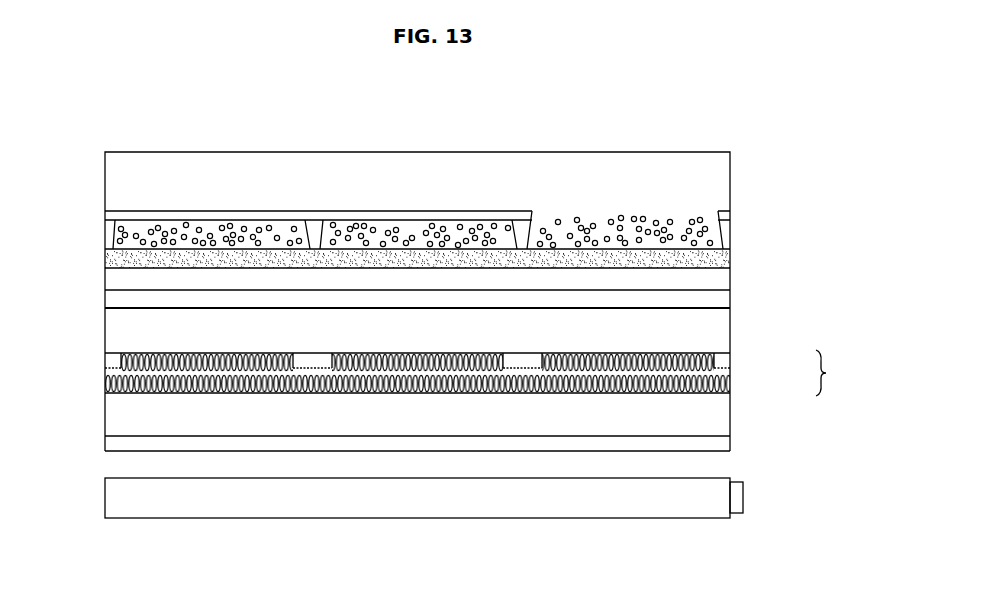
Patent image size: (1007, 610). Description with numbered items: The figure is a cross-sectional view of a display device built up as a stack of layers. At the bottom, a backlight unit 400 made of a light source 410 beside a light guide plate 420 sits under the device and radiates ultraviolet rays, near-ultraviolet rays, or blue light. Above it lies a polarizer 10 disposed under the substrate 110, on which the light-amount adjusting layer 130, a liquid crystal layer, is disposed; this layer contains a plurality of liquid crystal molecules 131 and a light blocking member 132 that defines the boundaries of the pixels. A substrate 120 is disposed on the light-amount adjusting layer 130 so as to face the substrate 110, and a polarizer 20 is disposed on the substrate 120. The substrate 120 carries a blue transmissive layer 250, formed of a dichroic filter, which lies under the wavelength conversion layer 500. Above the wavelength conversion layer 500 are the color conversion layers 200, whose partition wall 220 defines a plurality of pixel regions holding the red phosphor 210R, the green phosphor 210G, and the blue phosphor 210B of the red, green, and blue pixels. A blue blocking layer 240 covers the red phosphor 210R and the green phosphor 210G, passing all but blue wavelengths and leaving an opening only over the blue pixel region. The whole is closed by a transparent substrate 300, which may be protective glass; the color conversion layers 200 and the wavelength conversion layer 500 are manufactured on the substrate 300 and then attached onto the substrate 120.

The color conversion layer 200 is at (96, 231).
The substrate 300 is at (715, 180).
The blue blocking layer 240 is at (732, 212).
The partition wall 220 is at (726, 238).
The red phosphor 210R is at (255, 232).
The green phosphor 210G is at (378, 227).
The blue phosphor 210B is at (588, 220).
The wavelength conversion layer 500 is at (720, 258).
The blue transmissive layer 250 is at (718, 277).
The polarizer 20 is at (718, 300).
The substrate 120 is at (715, 333).
The light-amount adjusting layer 130 is at (841, 373).
The light blocking member 132 is at (719, 362).
The liquid crystal molecules 131 is at (731, 385).
The substrate 110 is at (715, 413).
The polarizer 10 is at (720, 443).
The backlight unit 400 is at (429, 544).
The light guide plate 420 is at (682, 509).
The light source 410 is at (737, 513).